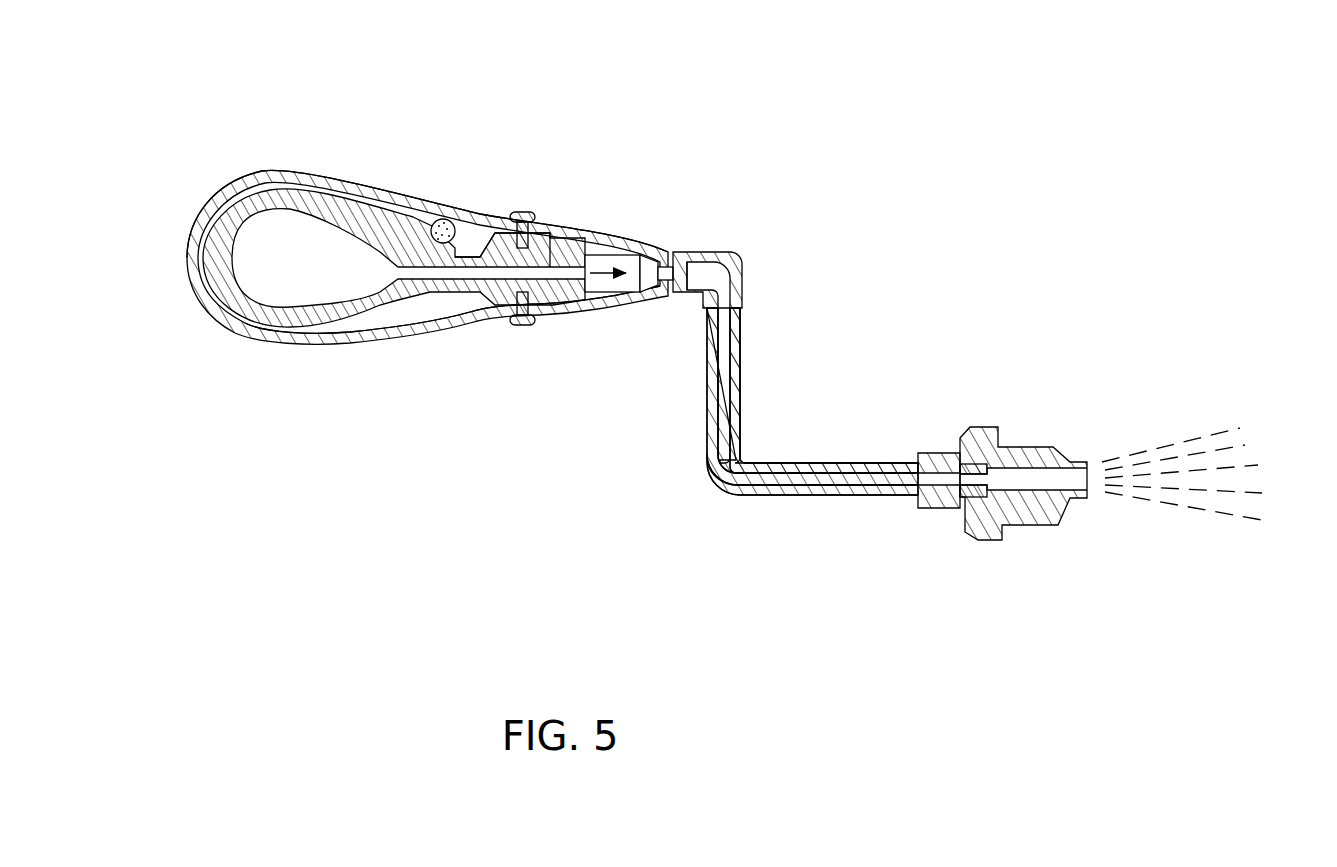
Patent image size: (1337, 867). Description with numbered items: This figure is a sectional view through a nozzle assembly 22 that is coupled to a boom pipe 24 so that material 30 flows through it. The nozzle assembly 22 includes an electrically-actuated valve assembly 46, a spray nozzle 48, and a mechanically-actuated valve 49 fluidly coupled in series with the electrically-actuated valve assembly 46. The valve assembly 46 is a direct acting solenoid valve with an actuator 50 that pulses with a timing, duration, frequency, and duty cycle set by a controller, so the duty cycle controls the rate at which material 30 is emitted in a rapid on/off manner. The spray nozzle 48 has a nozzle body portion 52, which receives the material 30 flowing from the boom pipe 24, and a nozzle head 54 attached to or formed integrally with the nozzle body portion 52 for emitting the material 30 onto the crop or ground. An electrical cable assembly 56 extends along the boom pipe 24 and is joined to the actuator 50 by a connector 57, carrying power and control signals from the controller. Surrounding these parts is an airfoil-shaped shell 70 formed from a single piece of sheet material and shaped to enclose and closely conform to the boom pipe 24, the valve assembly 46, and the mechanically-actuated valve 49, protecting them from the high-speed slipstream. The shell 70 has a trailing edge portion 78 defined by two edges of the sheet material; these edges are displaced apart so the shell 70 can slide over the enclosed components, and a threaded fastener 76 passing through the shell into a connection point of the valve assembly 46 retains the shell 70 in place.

The nozzle assembly 22 is at (717, 166).
The boom pipe 24 is at (237, 312).
The material 30 is at (1183, 435).
The electrically-actuated valve assembly 46 is at (555, 110).
The spray nozzle 48 is at (973, 565).
The mechanically-actuated valve 49 is at (613, 300).
The actuator 50 is at (570, 218).
The nozzle body portion 52 is at (741, 430).
The nozzle head 54 is at (1035, 440).
The electrical cable assembly 56 is at (432, 220).
The connector 57 is at (478, 210).
The airfoil-shaped shell 70 is at (420, 336).
The threaded fastener 76 is at (522, 212).
The trailing edge portion 78 is at (699, 233).